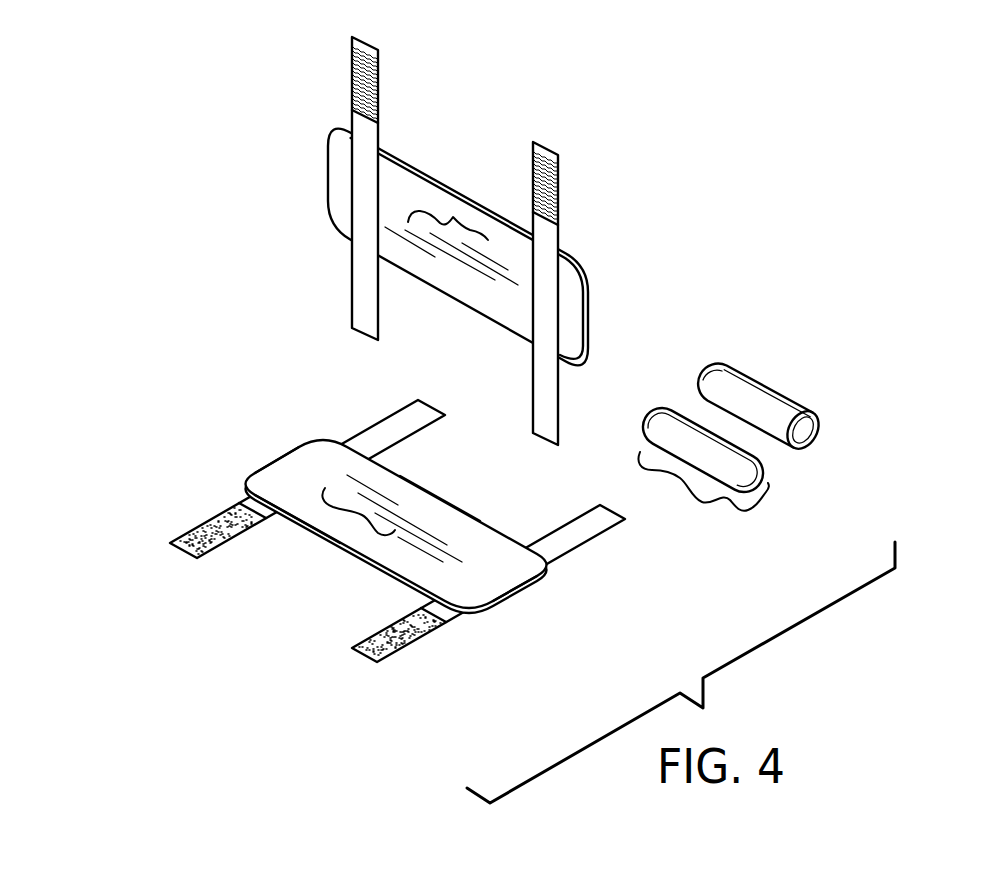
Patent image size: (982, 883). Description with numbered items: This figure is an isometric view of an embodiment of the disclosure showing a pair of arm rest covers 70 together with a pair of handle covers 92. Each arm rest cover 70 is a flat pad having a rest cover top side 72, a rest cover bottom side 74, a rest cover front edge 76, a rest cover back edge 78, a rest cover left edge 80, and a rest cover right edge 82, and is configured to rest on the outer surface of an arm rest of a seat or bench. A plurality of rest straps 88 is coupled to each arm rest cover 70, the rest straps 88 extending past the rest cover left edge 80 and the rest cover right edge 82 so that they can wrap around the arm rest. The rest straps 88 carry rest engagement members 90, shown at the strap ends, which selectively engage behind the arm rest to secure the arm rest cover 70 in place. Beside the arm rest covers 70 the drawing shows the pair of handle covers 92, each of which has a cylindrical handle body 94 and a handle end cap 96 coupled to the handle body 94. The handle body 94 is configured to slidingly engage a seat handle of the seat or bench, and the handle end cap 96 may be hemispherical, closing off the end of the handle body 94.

The arm rest cover 70 is at (395, 355).
The rest cover top side 72 is at (362, 516).
The rest cover bottom side 74 is at (452, 218).
The rest cover front edge 76 is at (518, 608).
The rest cover back edge 78 is at (267, 455).
The rest cover left edge 80 is at (290, 527).
The rest cover right edge 82 is at (445, 500).
The rest straps 88 is at (370, 303).
The rest engagement members 90 is at (330, 355).
The handle covers 92 is at (746, 412).
The handle body 94 is at (687, 477).
The handle end cap 96 is at (748, 507).